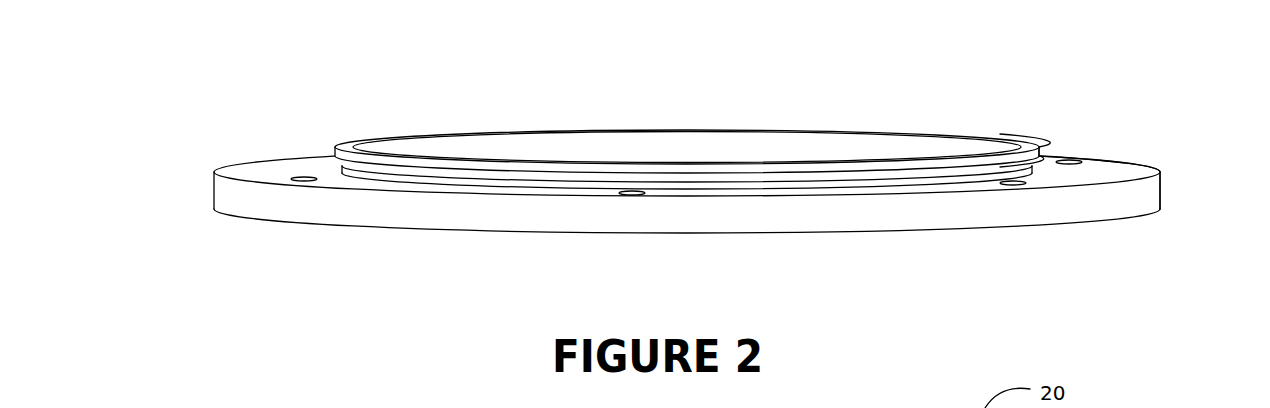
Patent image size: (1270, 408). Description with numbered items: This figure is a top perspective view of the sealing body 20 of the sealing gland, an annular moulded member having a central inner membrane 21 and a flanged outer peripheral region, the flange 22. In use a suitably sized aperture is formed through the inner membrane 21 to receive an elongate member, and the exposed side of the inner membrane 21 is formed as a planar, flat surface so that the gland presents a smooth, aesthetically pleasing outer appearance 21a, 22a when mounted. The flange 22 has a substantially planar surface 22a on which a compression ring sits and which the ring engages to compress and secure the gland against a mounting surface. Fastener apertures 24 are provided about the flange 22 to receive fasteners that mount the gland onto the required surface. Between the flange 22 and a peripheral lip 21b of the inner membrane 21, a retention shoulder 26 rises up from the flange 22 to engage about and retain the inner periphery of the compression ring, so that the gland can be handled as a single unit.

The sealing body 20 is at (702, 160).
The inner membrane 21 is at (715, 105).
The outer appearance of the membrane 21a is at (535, 140).
The peripheral lip 21b is at (1040, 160).
The flange 22 is at (702, 173).
The planar surface of the flange 22a is at (1137, 173).
The fastener apertures 24 is at (300, 177).
The retention shoulder 26 is at (404, 175).